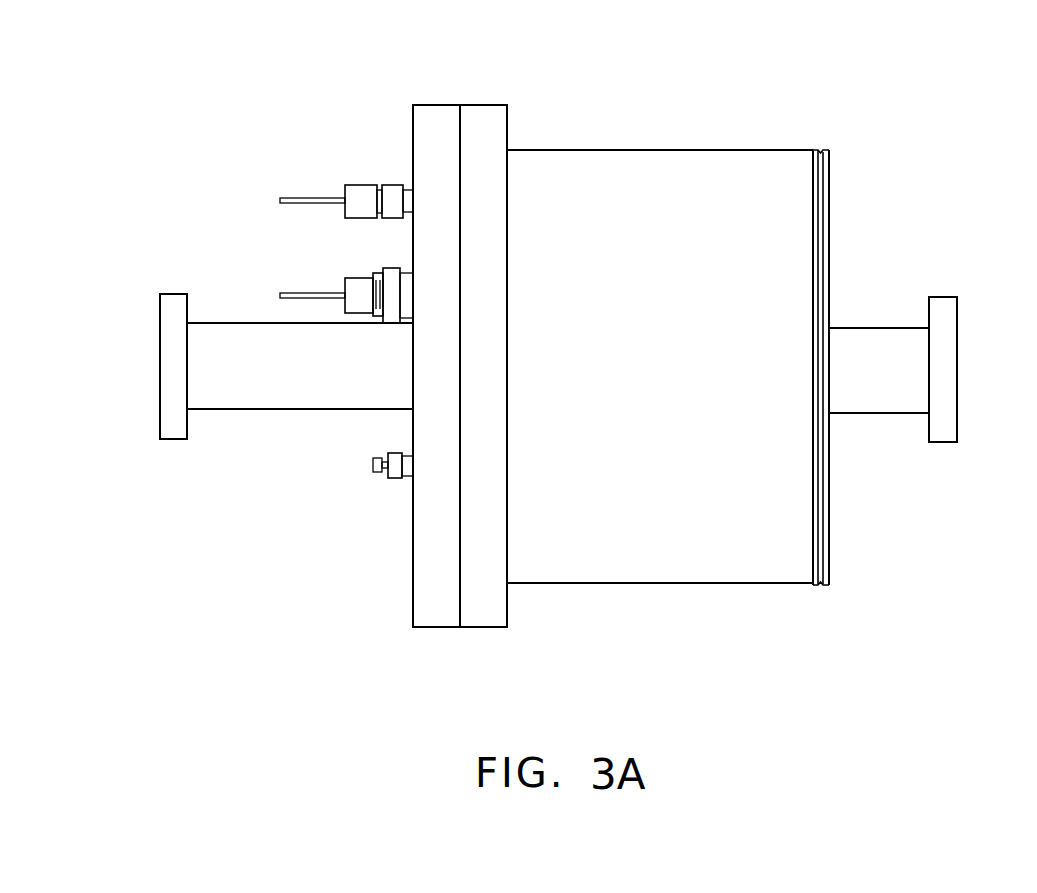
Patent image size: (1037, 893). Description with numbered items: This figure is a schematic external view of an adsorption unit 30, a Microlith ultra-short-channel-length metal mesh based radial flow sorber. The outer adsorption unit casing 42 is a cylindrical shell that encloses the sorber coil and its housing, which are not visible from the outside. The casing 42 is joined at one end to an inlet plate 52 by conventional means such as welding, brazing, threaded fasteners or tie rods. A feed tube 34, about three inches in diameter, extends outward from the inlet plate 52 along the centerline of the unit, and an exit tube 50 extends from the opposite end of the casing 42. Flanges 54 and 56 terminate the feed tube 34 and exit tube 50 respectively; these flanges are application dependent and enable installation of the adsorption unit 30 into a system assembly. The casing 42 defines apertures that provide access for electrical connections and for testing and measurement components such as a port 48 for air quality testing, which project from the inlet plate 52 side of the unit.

The adsorption unit 30 is at (761, 36).
The feed tube 34 is at (243, 393).
The adsorption unit casing 42 is at (789, 169).
The port 48 is at (370, 468).
The exit tube 50 is at (866, 398).
The inlet plate 52 is at (426, 597).
The flange 54 is at (163, 323).
The flange 56 is at (945, 345).